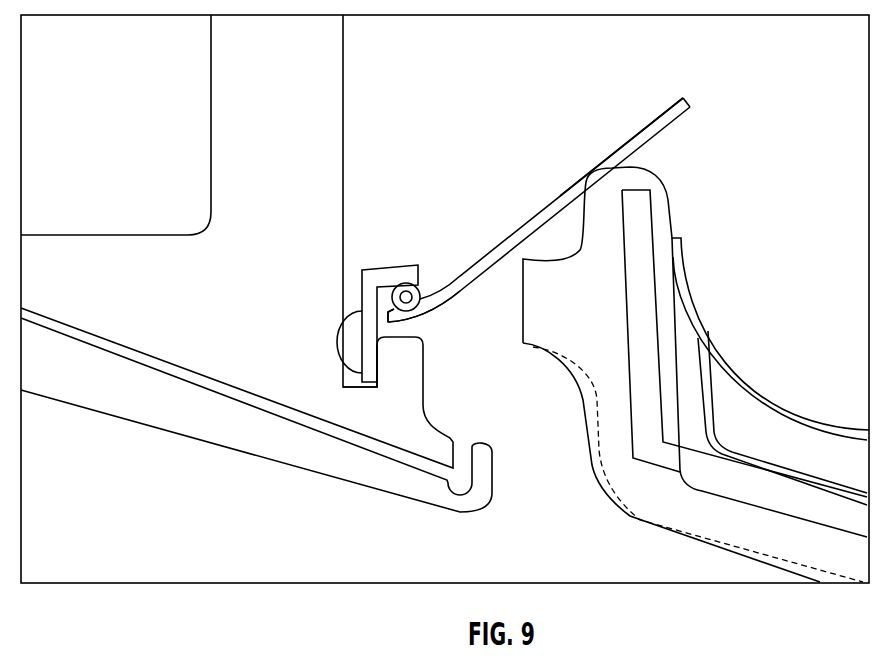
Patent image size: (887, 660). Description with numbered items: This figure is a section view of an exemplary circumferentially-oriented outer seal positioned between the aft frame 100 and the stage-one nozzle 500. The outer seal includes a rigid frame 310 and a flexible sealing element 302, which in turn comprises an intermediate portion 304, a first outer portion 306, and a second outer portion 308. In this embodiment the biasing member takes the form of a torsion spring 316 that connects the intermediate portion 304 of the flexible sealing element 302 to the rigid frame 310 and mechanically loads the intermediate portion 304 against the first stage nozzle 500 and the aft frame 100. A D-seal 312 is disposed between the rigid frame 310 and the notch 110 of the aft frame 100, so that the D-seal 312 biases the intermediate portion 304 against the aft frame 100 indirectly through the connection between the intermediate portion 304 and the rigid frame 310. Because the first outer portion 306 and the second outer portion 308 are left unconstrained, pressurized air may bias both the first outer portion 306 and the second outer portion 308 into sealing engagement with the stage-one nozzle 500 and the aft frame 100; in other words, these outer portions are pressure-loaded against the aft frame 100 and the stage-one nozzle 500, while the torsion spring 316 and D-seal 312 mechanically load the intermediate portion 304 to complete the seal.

The aft frame 100 is at (343, 108).
The notch 110 is at (352, 374).
The flexible sealing element 302 is at (690, 106).
The intermediate portion 304 is at (428, 303).
The first outer portion 306 is at (397, 323).
The second outer portion 308 is at (610, 165).
The rigid frame 310 is at (398, 270).
The D-seal 312 is at (338, 328).
The torsion spring 316 is at (418, 282).
The stage-one nozzle 500 is at (665, 213).